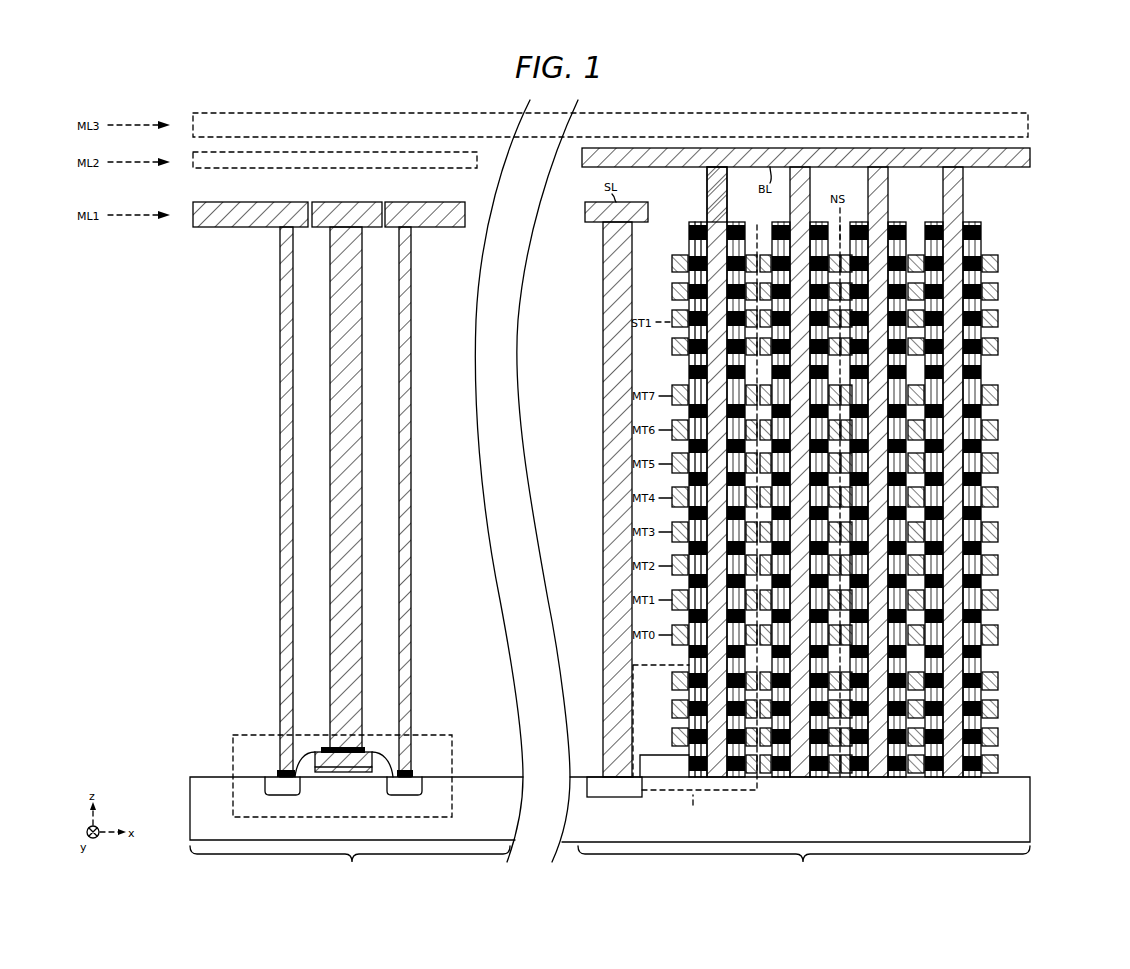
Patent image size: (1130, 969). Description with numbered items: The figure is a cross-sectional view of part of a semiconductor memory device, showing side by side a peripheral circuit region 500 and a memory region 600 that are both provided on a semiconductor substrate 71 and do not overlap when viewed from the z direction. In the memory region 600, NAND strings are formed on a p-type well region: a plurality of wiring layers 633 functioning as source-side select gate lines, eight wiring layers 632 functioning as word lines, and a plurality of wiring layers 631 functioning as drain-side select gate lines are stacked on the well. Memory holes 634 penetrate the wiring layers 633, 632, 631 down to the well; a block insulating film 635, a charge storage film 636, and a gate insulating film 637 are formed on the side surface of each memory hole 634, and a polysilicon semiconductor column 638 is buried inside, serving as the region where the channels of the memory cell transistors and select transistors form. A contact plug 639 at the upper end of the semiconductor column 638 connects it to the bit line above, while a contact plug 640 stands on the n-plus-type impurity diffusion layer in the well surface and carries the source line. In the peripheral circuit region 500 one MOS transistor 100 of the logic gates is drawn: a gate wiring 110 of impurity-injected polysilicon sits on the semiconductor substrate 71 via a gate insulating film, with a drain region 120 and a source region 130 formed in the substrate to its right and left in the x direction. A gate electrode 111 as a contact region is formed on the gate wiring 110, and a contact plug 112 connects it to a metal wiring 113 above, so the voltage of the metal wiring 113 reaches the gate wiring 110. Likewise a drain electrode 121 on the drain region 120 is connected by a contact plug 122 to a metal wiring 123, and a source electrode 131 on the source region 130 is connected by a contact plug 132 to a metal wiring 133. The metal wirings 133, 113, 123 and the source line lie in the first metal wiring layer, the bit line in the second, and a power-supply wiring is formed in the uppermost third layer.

The metal wiring 133 is at (208, 228).
The metal wiring 113 is at (368, 228).
The metal wiring 123 is at (453, 228).
The contact plug 132 is at (280, 645).
The contact plug 112 is at (336, 645).
The contact plug 122 is at (399, 645).
The MOS transistor 100 is at (258, 731).
The gate wiring 110 is at (347, 775).
The gate electrode 111 is at (333, 747).
The source electrode 131 is at (280, 770).
The drain electrode 121 is at (400, 770).
The source region 130 is at (265, 794).
The drain region 120 is at (422, 792).
The peripheral circuit region 500 is at (350, 866).
The contact plug 640 is at (603, 405).
The contact plug 639 is at (707, 203).
The block insulating film 635 is at (689, 232).
The charge storage film 636 is at (694, 242).
The gate insulating film 637 is at (700, 247).
The wiring layers 631 is at (1027, 358).
The semiconductor column 638 is at (984, 370).
The wiring layers 632 is at (1003, 635).
The memory hole 634 is at (984, 656).
The wiring layers 633 is at (1029, 776).
The semiconductor substrate 71 is at (1030, 808).
The memory region 600 is at (804, 866).